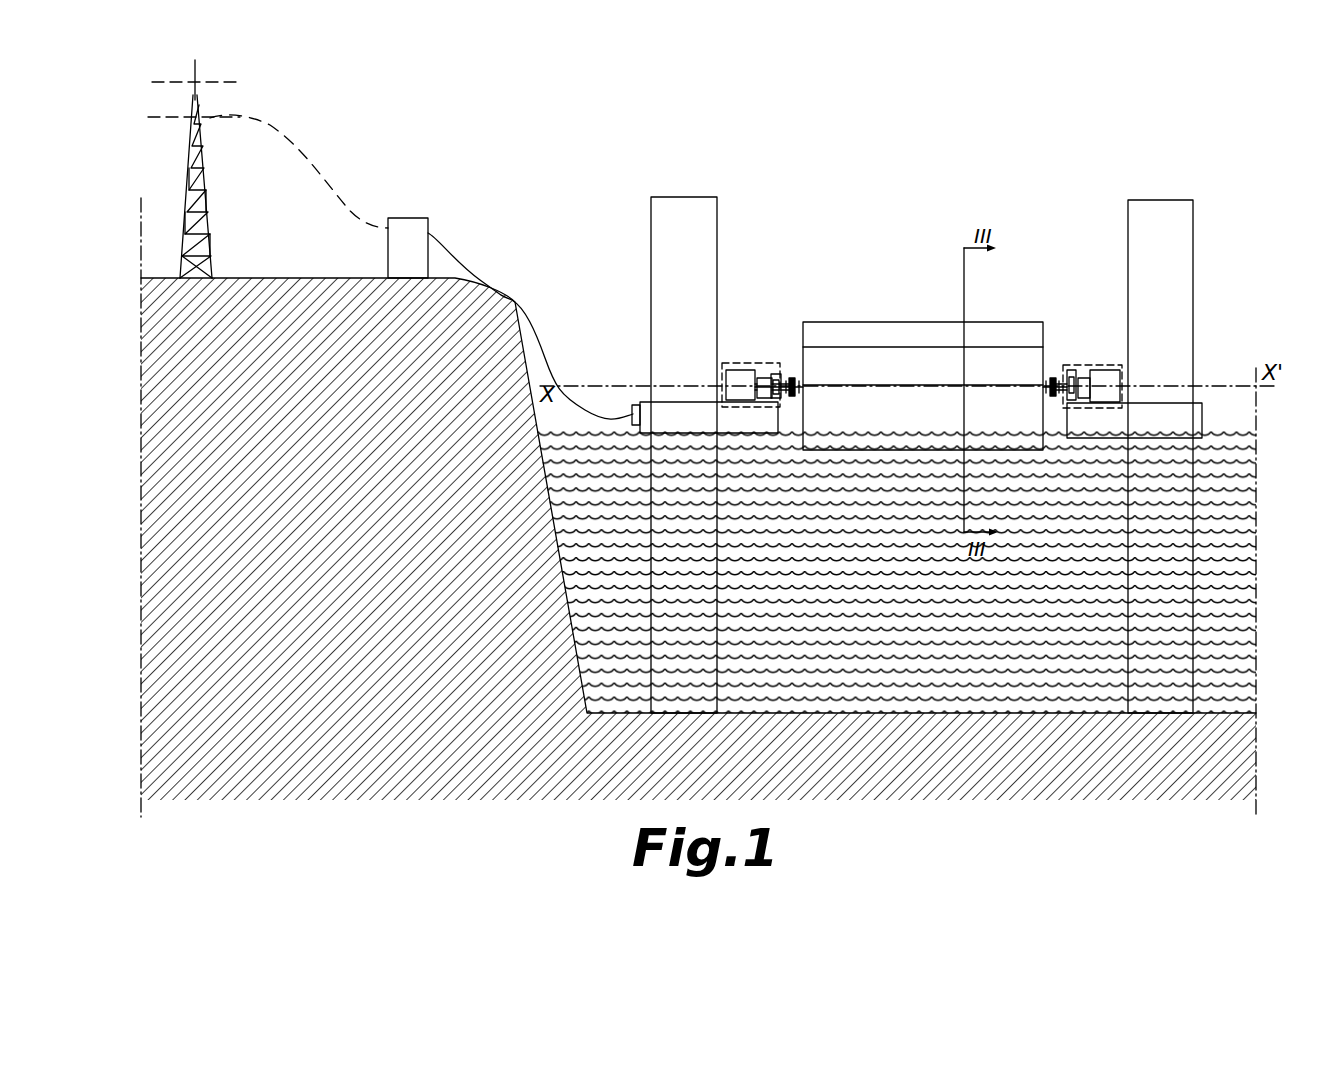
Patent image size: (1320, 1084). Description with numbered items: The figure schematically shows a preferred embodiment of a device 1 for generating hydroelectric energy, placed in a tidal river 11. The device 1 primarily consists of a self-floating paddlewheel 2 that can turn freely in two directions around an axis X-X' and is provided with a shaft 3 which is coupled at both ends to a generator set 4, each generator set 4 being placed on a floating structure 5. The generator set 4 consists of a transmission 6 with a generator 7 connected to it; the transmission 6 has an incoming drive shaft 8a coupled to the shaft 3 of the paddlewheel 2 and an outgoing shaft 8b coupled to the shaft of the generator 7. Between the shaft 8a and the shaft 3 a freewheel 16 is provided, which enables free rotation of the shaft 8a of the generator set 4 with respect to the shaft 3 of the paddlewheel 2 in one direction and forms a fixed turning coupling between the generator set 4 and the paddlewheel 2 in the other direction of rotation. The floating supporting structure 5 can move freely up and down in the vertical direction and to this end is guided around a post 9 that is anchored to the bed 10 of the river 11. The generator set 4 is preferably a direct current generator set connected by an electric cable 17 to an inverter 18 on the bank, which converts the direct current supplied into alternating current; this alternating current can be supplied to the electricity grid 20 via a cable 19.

The device 1 is at (810, 181).
The paddlewheel 2 is at (865, 322).
The shaft 3 is at (1046, 372).
The generator set 4 is at (724, 365).
The floating structure 5 is at (650, 423).
The transmission 6 is at (765, 378).
The generator 7 is at (742, 370).
The incoming drive shaft 8a is at (793, 377).
The outgoing shaft 8b is at (764, 376).
The post 9 is at (682, 210).
The bed 10 is at (526, 776).
The river 11 is at (1230, 651).
The freewheel 16 is at (776, 374).
The electric cable 17 is at (557, 385).
The inverter 18 is at (413, 230).
The cable 19 is at (334, 184).
The electricity grid 20 is at (190, 152).